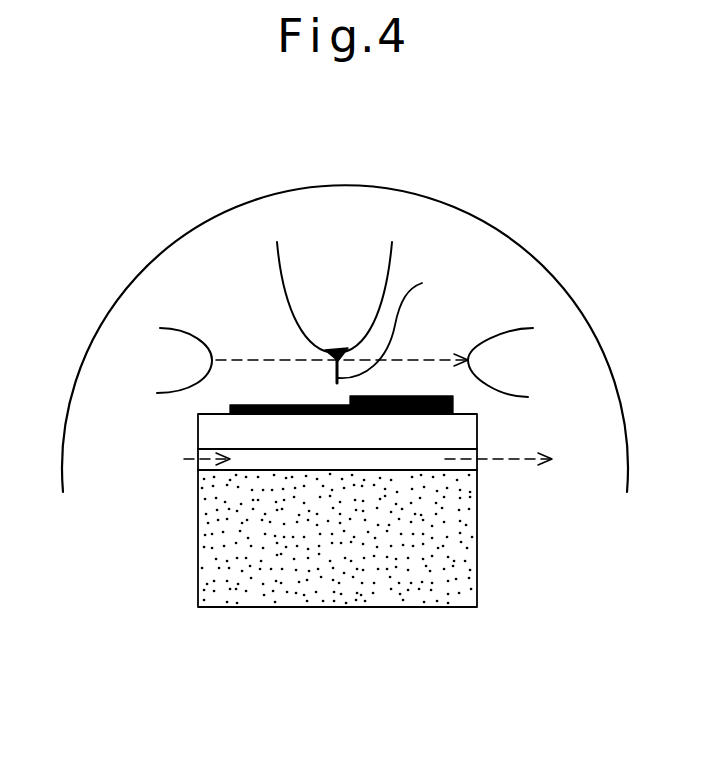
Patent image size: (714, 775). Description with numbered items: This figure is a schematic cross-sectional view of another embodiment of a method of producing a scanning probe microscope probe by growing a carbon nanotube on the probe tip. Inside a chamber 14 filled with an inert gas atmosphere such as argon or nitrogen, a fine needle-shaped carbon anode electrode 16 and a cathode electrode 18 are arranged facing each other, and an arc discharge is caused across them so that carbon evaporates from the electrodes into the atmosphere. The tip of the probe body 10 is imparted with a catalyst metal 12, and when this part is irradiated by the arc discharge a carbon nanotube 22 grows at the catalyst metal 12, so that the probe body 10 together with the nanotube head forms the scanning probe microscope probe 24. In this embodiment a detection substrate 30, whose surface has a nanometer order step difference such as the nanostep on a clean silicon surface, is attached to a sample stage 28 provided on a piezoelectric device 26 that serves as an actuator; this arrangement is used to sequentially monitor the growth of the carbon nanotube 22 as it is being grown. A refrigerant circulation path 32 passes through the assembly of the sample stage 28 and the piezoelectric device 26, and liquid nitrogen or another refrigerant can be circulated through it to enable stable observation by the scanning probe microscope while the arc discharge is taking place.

The probe body 10 is at (360, 272).
The catalyst metal 12 is at (326, 352).
The chamber 14 is at (442, 202).
The carbon anode electrode 16 is at (176, 347).
The cathode electrode 18 is at (508, 340).
The carbon nanotube 22 is at (392, 324).
The scanning probe microscope probe 24 is at (450, 232).
The piezoelectric device 26 is at (457, 562).
The sample stage 28 is at (463, 440).
The detection substrate 30 is at (455, 404).
The refrigerant circulation path 32 is at (425, 462).